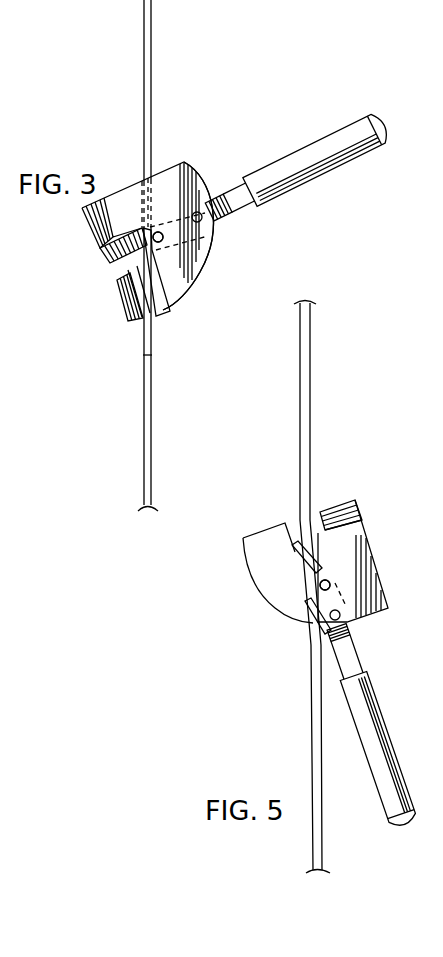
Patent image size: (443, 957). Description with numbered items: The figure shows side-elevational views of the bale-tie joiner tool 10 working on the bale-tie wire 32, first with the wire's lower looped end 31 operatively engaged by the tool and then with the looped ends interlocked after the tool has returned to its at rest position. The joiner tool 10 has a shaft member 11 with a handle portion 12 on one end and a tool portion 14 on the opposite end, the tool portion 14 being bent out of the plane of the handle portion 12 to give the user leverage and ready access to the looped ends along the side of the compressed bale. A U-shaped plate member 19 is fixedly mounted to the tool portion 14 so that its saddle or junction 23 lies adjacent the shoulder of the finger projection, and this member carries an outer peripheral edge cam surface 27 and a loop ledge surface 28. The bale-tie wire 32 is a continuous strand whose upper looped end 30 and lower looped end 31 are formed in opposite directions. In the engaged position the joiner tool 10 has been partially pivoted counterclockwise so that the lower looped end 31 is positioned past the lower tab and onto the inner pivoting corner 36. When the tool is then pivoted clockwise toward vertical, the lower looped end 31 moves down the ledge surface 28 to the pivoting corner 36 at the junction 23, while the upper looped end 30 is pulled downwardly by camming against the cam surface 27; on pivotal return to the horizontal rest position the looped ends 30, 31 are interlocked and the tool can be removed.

In FIG. 3, the bale-tie joiner tool 10 is at (205, 145).
In FIG. 3, the shaft member 11 is at (236, 203).
In FIG. 5, the shaft member 11 is at (355, 654).
In FIG. 3, the handle portion 12 is at (333, 162).
In FIG. 5, the handle portion 12 is at (387, 738).
In FIG. 3, the tool portion 14 is at (95, 250).
In FIG. 3, the U-shaped plate member 19 is at (186, 283).
In FIG. 5, the U-shaped plate member 19 is at (386, 603).
In FIG. 3, the saddle or junction 23 is at (153, 251).
In FIG. 3, the outer peripheral edge cam surface 27 is at (189, 294).
In FIG. 5, the outer peripheral edge cam surface 27 is at (272, 609).
In FIG. 3, the loop ledge surface 28 is at (117, 277).
In FIG. 3, the upper looped end 30 is at (168, 313).
In FIG. 5, the upper looped end 30 is at (303, 616).
In FIG. 3, the lower looped end 31 is at (130, 303).
In FIG. 5, the lower looped end 31 is at (322, 545).
In FIG. 3, the bale-tie wire 32 is at (152, 48).
In FIG. 5, the bale-tie wire 32 is at (311, 412).
In FIG. 5, the inner pivoting corner 36 is at (322, 587).